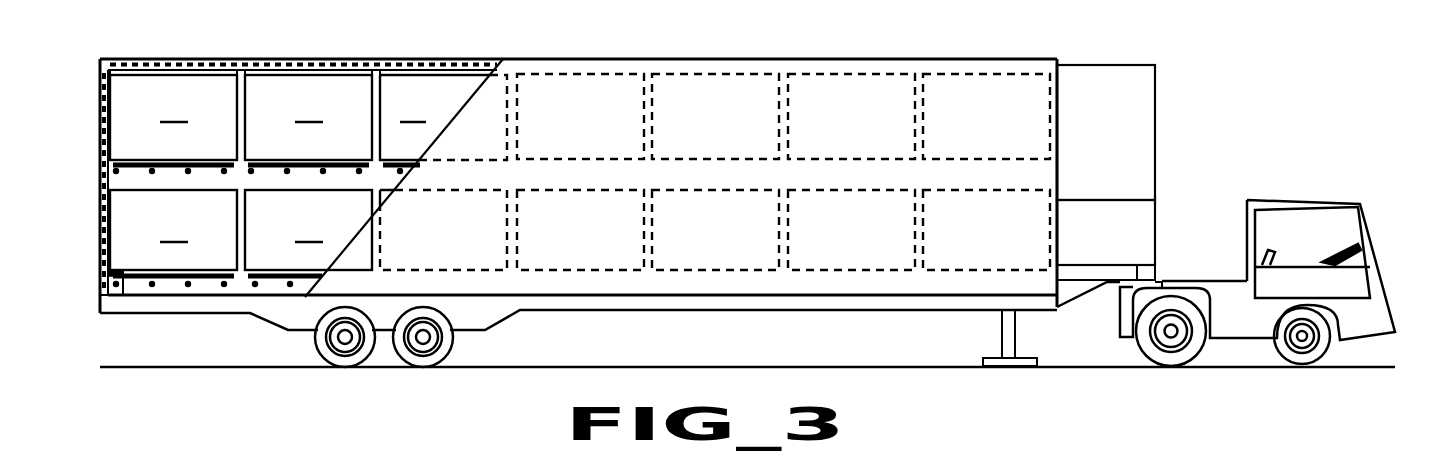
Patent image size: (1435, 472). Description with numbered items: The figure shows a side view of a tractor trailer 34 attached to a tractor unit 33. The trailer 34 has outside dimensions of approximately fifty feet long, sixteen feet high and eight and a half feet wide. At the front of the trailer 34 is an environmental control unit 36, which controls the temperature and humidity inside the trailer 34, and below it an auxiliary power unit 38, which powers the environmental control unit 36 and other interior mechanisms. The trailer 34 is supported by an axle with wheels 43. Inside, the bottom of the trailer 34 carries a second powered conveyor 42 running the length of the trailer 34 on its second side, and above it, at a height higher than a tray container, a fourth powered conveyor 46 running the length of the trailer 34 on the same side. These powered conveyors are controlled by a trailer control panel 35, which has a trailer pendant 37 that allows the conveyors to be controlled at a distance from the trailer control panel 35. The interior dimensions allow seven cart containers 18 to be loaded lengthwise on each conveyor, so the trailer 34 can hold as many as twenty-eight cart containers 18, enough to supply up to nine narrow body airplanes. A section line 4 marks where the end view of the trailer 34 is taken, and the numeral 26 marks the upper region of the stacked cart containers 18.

The section line 4— 4 is at (109, 392).
The cart container 18 is at (1065, 152).
The container support rails 26 is at (283, 77).
The tractor unit 33 is at (1295, 200).
The tractor trailer 34 is at (1018, 60).
The trailer control panel 35 is at (112, 294).
The environmental control unit 36 is at (1140, 103).
The trailer pendant 37 is at (107, 270).
The auxiliary power unit 38 is at (1140, 245).
The second powered conveyor 42 is at (302, 274).
The wheels 43 is at (425, 366).
The fourth powered conveyor 46 is at (378, 161).